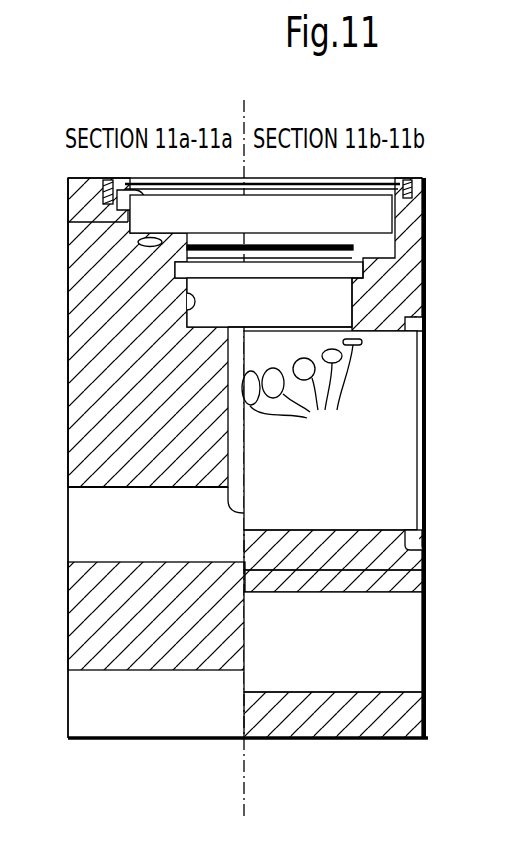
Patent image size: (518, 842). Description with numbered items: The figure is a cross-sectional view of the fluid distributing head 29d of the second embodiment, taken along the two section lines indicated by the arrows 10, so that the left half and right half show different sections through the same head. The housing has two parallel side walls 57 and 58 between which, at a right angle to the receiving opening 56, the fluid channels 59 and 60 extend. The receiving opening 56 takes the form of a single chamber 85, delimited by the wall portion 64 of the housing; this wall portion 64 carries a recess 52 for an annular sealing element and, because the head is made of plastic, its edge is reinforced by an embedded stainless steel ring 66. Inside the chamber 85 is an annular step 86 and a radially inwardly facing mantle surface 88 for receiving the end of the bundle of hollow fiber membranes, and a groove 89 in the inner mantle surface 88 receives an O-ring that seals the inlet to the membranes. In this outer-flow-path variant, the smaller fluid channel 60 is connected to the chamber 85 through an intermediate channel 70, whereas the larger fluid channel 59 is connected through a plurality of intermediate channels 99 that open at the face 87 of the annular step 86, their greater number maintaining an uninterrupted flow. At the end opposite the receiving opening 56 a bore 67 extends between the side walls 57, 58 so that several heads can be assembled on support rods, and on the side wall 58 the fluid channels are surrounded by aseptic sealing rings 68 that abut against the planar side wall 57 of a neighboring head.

The fluid distributing head 29d is at (131, 100).
The figure reference for section lines 10 is at (243, 103).
The receiving opening 56 is at (352, 203).
The stainless steel ring 66 is at (103, 192).
The recess 52 is at (68, 223).
The face of the annular step 87 is at (128, 248).
The annular step 86 is at (190, 240).
The inner mantle surface 88 is at (193, 312).
The side wall 57 is at (62, 411).
The intermediate channel 70 is at (228, 443).
The fluid channel 60 is at (120, 518).
The wall portion 64 is at (424, 210).
The groove 89 is at (362, 260).
The side wall 58 is at (425, 268).
The chamber 85 is at (333, 307).
The fluid channel 59 is at (392, 453).
The intermediate channels 99 is at (302, 390).
The aseptic sealing ring 68 is at (420, 550).
The bore 67 is at (383, 658).